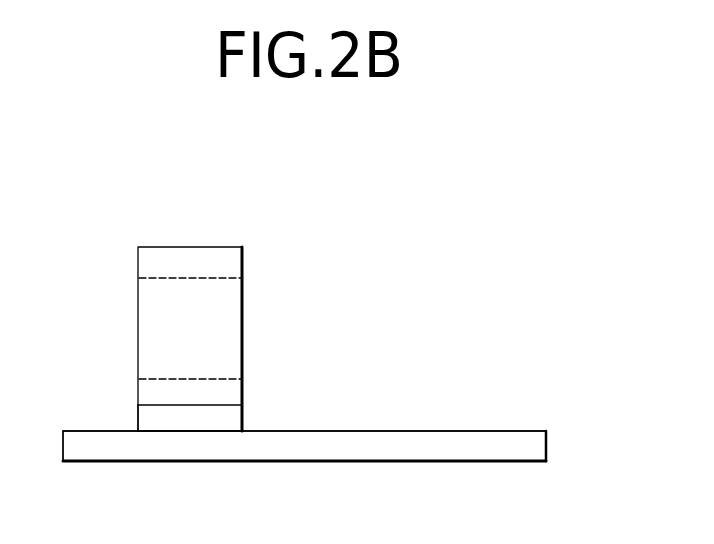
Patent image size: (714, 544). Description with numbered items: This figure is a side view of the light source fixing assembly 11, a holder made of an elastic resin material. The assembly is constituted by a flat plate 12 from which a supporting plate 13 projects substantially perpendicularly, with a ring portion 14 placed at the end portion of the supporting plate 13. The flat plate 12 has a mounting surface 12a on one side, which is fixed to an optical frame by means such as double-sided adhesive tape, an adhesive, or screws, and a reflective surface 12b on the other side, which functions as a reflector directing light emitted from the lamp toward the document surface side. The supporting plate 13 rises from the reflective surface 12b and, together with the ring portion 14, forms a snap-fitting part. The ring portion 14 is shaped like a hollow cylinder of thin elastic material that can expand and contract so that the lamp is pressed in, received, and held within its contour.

The light source fixing assembly 11 is at (302, 303).
The flat plate 12 is at (380, 431).
The mounting surface 12a is at (472, 463).
The reflective surface 12b is at (500, 432).
The supporting plate 13 is at (244, 418).
The ring portion 14 is at (243, 266).